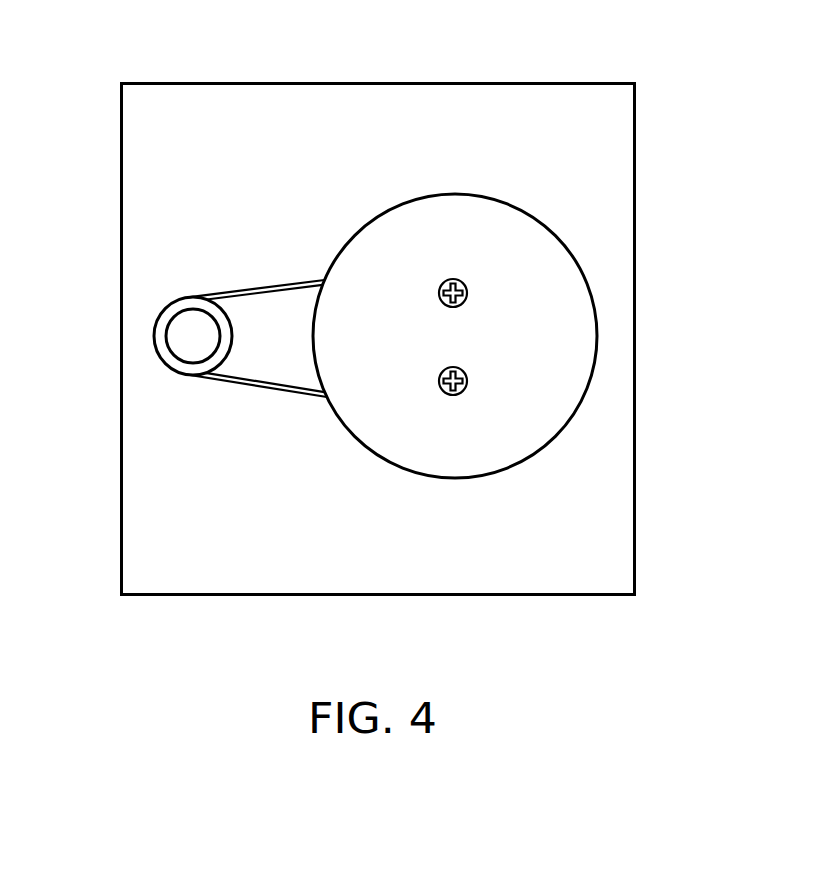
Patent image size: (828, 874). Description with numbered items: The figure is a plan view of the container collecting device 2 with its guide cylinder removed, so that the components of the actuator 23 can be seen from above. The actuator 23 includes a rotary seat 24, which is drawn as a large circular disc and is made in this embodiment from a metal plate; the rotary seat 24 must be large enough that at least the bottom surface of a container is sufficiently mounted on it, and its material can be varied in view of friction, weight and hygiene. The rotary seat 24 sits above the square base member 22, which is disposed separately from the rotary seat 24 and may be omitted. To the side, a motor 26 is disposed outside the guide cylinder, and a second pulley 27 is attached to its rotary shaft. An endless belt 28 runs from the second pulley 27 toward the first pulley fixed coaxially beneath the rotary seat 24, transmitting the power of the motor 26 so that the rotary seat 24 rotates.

The container collecting device 2 is at (577, 83).
The base member 22 is at (268, 580).
The actuator 23 is at (593, 372).
The rotary seat 24 is at (578, 312).
The motor 26 is at (190, 335).
The second pulley 27 is at (167, 368).
The endless belt 28 is at (240, 288).